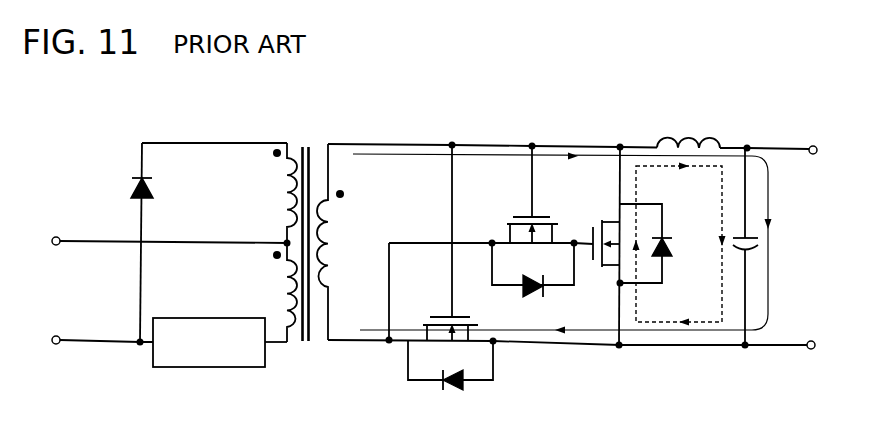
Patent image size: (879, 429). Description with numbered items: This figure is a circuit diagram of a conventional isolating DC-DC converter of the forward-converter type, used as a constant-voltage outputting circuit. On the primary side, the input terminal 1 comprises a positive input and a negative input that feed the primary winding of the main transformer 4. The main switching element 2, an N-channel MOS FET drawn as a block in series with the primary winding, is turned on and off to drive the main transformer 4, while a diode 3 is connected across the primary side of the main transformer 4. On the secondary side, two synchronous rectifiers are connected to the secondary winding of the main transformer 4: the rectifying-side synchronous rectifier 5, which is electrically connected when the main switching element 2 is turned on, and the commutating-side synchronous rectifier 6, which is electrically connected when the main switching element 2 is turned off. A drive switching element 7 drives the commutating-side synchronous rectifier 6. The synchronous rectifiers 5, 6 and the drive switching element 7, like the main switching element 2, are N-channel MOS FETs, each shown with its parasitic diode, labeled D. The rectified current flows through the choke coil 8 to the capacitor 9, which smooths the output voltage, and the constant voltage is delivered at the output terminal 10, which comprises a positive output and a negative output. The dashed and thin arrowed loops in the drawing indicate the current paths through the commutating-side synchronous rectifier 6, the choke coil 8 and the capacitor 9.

The input terminal 1 is at (57, 237).
The main switching element 2 is at (221, 318).
The diode 3 is at (132, 190).
The main transformer 4 is at (306, 146).
The rectifying-side synchronous rectifier 5 is at (470, 335).
The commutating-side synchronous rectifier 6 is at (612, 270).
The drive switching element 7 is at (508, 233).
The choke coil 8 is at (714, 145).
The capacitor 9 is at (757, 250).
The output terminal 10 is at (825, 131).